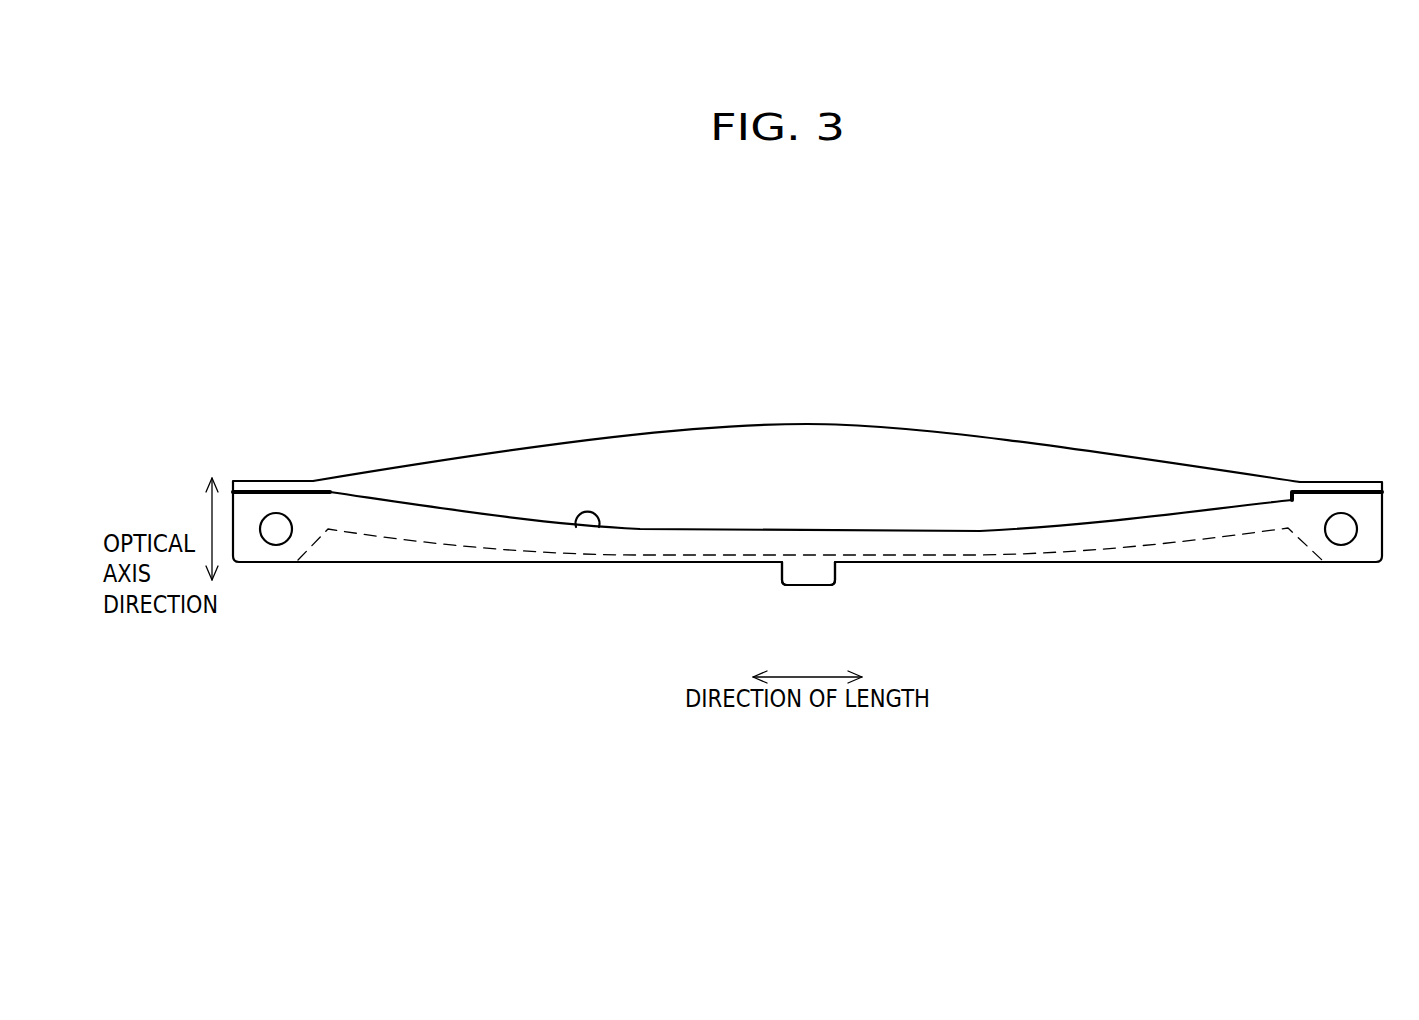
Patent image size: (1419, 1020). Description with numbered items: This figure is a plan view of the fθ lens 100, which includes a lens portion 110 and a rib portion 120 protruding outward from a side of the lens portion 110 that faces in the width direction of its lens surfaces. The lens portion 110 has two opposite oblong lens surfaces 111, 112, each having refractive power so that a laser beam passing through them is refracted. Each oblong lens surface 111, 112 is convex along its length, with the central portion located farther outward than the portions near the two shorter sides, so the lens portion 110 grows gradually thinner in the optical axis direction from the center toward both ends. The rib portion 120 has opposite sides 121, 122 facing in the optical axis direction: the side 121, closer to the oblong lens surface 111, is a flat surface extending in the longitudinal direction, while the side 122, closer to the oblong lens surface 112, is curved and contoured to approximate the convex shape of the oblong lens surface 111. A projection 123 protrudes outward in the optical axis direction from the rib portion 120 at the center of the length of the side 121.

The fθ lens 100 is at (1095, 310).
The lens portion 110 is at (905, 427).
The oblong lens surface 112 is at (1052, 447).
The rib portion 120 is at (398, 507).
The oblong lens surface 111 is at (950, 553).
The side of rib portion 121 is at (490, 563).
The side of rib portion 122 is at (592, 528).
The projection 123 is at (810, 585).